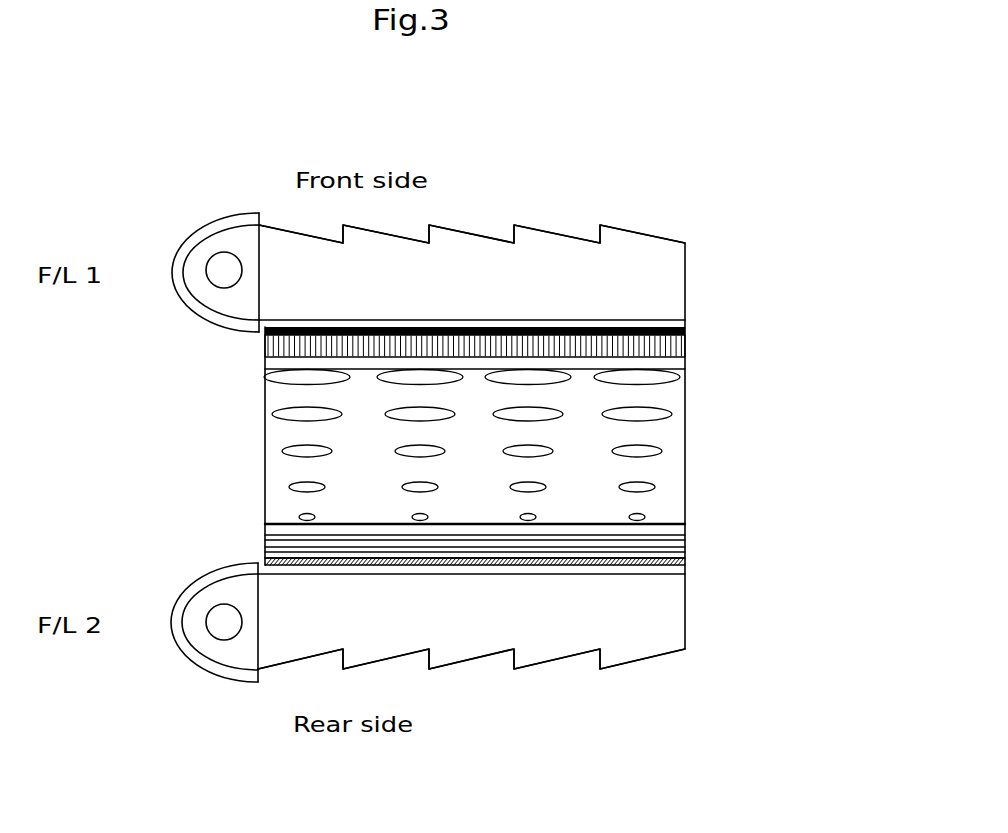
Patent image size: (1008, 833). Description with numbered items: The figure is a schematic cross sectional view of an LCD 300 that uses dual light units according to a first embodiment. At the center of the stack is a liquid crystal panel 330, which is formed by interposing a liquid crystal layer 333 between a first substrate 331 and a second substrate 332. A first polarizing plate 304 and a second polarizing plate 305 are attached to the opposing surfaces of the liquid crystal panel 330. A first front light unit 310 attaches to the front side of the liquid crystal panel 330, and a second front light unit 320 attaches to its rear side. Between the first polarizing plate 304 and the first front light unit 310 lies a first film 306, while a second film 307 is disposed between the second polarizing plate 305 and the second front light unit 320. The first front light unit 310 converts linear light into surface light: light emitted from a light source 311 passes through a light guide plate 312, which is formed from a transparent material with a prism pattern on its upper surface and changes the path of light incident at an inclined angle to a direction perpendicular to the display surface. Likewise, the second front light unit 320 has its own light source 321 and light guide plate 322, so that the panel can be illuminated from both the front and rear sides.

The LCD 300 is at (519, 461).
The first polarizing plate 304 is at (267, 344).
The second polarizing plate 305 is at (685, 547).
The first film 306 is at (685, 330).
The second film 307 is at (685, 563).
The first front light unit 310 is at (523, 221).
The light source 311 is at (222, 268).
The light guide plate 312 is at (685, 256).
The second front light unit 320 is at (528, 687).
The light source 321 is at (221, 627).
The light guide plate 322 is at (685, 635).
The liquid crystal panel 330 is at (560, 444).
The first substrate 331 is at (526, 511).
The second substrate 332 is at (678, 364).
The liquid crystal layer 333 is at (682, 458).